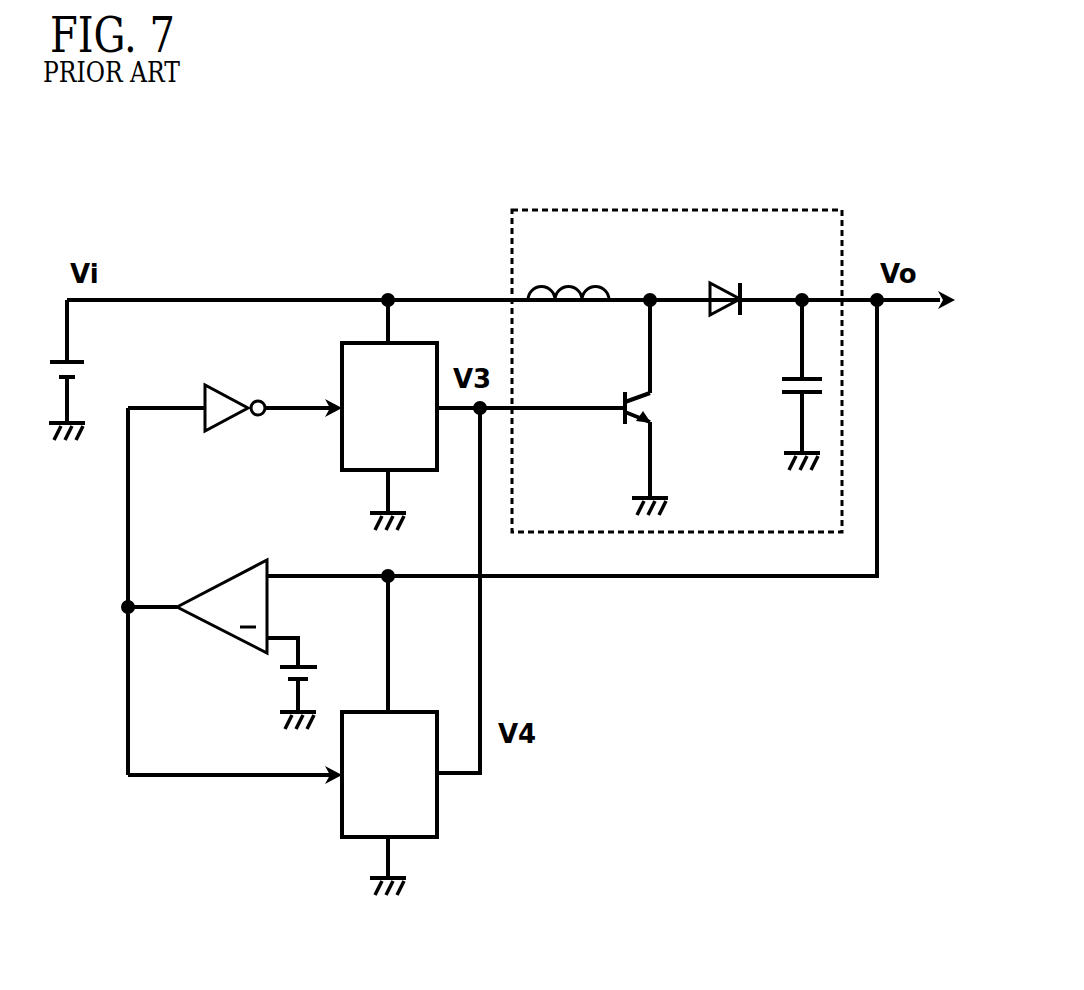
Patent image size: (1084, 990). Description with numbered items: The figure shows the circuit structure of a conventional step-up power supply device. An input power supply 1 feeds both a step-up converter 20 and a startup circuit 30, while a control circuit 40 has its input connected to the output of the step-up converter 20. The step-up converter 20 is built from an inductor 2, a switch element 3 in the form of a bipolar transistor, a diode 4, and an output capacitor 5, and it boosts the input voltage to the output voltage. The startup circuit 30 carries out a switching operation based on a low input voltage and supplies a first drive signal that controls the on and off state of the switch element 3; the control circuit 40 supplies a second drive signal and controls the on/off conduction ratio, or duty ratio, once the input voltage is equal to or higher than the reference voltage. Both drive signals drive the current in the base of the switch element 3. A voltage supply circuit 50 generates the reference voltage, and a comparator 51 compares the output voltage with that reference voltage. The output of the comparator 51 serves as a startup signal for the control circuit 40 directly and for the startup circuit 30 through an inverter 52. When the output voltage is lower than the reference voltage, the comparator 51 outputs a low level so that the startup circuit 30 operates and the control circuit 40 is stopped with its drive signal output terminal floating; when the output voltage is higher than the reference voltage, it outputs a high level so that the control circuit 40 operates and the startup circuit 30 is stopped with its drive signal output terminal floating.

The input power supply 1 is at (85, 368).
The inductor 2 is at (583, 290).
The switch element 3 is at (615, 418).
The diode 4 is at (723, 286).
The output capacitor 5 is at (778, 386).
The step-up converter 20 is at (510, 238).
The startup circuit 30 is at (340, 368).
The control circuit 40 is at (437, 817).
The voltage supply circuit 50 is at (278, 675).
The comparator 51 is at (203, 592).
The inverter 52 is at (240, 412).